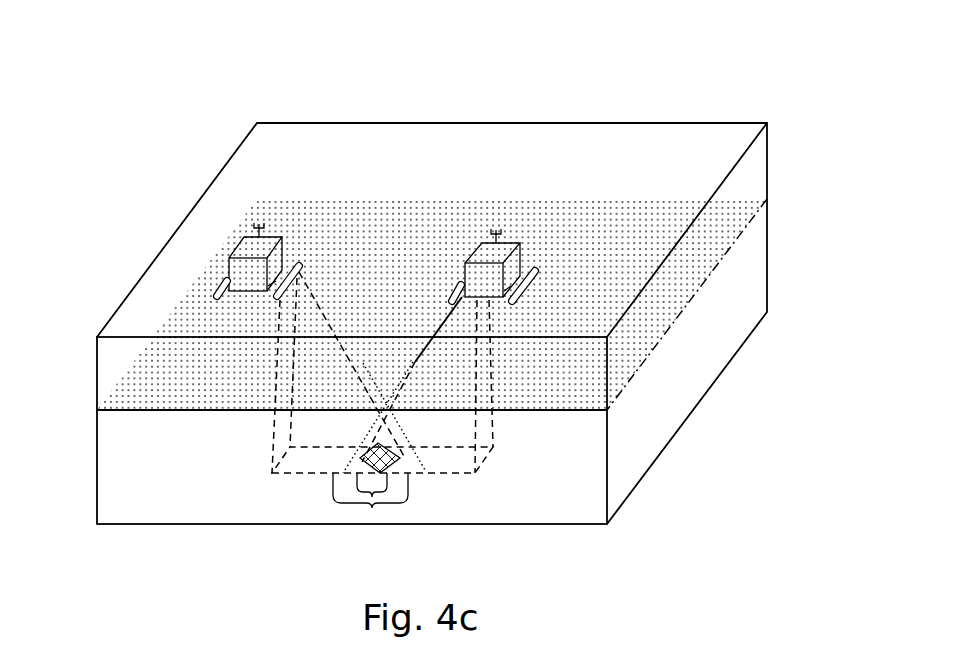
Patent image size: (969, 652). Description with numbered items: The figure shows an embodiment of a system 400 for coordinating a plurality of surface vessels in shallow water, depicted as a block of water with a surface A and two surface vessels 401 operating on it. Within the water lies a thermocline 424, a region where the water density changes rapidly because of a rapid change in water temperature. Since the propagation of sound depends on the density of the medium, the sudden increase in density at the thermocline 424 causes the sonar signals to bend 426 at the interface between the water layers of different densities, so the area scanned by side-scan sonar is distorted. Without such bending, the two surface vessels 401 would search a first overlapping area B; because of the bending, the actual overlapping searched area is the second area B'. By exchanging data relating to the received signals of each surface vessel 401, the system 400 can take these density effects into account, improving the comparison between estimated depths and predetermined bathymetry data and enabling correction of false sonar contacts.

The system 400 is at (262, 69).
The surface vessel 401 is at (223, 214).
The thermocline 424 is at (675, 318).
The bending of sonar signals 426 is at (355, 360).
The top surface A is at (605, 138).
The first overlapping area B is at (372, 527).
The second area B' is at (362, 519).